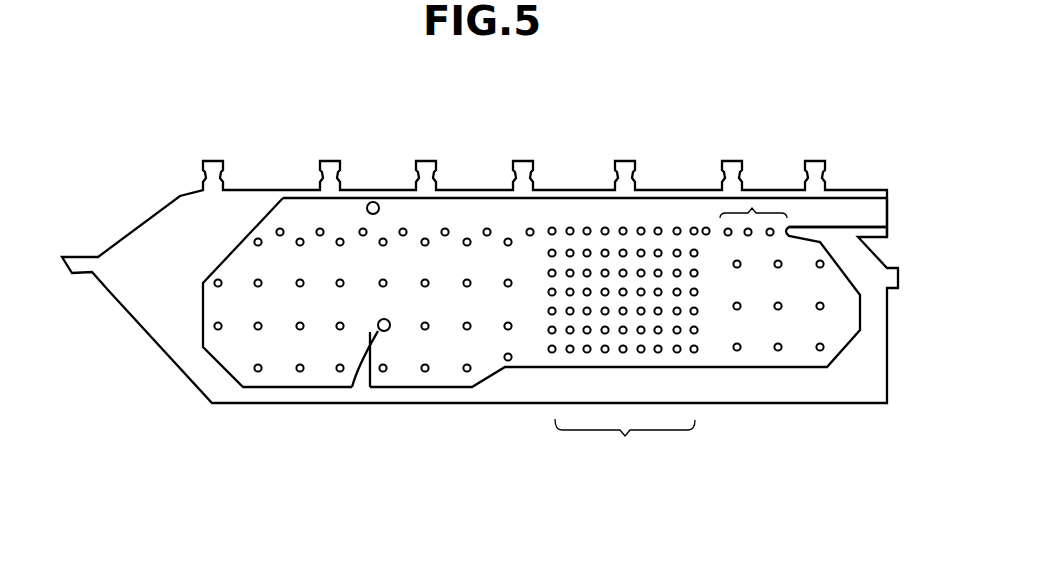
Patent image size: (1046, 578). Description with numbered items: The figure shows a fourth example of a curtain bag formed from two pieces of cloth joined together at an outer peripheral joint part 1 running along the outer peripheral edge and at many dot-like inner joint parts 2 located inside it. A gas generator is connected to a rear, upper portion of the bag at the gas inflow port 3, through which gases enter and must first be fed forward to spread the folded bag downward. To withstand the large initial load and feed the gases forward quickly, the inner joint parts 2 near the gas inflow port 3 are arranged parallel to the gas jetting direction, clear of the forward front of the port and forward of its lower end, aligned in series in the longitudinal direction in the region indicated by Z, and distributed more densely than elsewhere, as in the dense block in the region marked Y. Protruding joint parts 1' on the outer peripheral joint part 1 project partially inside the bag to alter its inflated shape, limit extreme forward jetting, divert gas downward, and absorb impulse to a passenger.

The outer peripheral joint part 1 is at (480, 262).
The protruding joint part 1' is at (414, 272).
The inner joint part 2 is at (488, 228).
The gas inflow port 3 is at (860, 208).
The region Z is at (752, 206).
The region Y is at (625, 442).